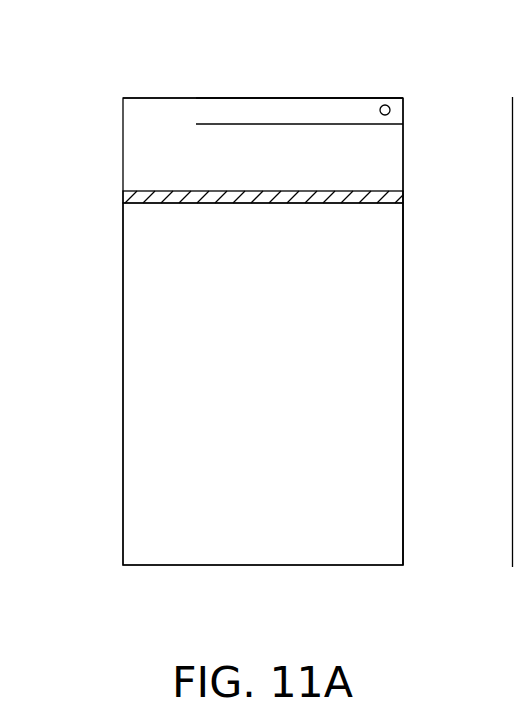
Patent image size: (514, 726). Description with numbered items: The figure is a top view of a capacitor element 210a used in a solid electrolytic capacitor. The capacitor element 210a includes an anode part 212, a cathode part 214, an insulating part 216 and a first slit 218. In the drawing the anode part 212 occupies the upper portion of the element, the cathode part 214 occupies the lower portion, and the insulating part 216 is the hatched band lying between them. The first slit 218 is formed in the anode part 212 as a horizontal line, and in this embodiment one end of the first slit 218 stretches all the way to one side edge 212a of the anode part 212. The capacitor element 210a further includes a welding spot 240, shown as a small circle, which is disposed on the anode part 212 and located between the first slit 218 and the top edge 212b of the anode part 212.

The capacitor element 210a is at (395, 630).
The anode part 212 is at (140, 165).
The side edge 212a is at (405, 165).
The top edge 212b is at (293, 95).
The cathode part 214 is at (131, 316).
The insulating part 216 is at (129, 197).
The first slit 218 is at (240, 124).
The welding spot 240 is at (391, 112).